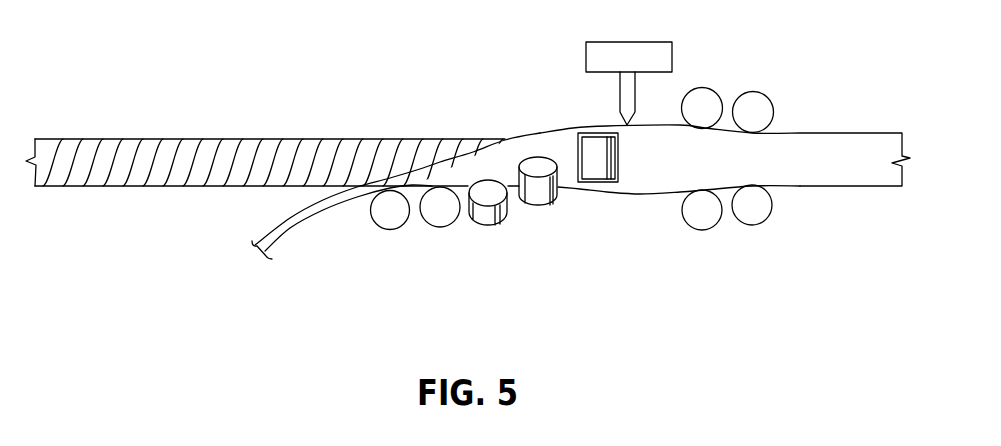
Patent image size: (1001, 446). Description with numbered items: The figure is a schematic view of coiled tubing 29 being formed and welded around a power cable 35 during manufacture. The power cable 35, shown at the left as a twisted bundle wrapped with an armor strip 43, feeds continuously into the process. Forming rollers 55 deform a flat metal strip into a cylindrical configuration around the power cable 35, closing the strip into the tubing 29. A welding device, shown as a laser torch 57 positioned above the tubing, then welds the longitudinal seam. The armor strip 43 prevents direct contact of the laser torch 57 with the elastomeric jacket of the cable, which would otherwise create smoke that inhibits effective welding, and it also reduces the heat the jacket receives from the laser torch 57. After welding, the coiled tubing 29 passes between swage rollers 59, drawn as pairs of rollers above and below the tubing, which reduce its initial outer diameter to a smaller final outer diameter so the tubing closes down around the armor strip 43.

The coiled tubing 29 is at (822, 147).
The power cable 35 is at (220, 130).
The armor strip 43 is at (135, 151).
The forming rollers 55 is at (387, 218).
The laser torch 57 is at (618, 92).
The swage rollers 59 is at (750, 110).